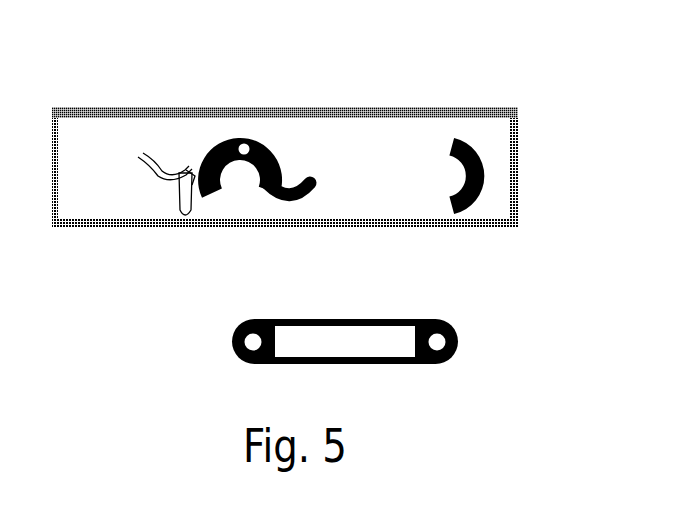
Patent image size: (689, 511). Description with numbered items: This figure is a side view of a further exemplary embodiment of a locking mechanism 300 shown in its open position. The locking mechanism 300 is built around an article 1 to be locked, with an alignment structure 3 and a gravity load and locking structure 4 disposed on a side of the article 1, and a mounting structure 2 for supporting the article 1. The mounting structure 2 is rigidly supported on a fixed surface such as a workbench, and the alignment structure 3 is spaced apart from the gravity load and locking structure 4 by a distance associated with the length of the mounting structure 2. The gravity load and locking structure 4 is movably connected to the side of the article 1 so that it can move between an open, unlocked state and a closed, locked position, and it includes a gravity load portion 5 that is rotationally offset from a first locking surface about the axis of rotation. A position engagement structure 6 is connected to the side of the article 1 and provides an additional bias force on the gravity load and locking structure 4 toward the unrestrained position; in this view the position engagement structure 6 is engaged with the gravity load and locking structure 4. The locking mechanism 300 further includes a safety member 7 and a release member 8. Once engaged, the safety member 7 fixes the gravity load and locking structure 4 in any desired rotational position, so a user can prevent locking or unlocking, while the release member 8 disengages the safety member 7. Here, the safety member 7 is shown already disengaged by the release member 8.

The article 1 is at (340, 110).
The mounting structure 2 is at (308, 322).
The alignment structure 3 is at (466, 140).
The gravity load and locking structure 4 is at (241, 143).
The gravity load portion 5 is at (283, 182).
The position engagement structure 6 is at (190, 182).
The safety member 7 is at (180, 188).
The release member 8 is at (155, 178).
The locking mechanism 300 is at (483, 302).